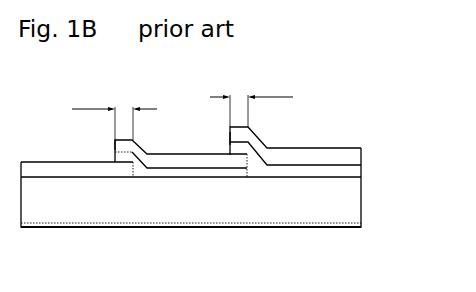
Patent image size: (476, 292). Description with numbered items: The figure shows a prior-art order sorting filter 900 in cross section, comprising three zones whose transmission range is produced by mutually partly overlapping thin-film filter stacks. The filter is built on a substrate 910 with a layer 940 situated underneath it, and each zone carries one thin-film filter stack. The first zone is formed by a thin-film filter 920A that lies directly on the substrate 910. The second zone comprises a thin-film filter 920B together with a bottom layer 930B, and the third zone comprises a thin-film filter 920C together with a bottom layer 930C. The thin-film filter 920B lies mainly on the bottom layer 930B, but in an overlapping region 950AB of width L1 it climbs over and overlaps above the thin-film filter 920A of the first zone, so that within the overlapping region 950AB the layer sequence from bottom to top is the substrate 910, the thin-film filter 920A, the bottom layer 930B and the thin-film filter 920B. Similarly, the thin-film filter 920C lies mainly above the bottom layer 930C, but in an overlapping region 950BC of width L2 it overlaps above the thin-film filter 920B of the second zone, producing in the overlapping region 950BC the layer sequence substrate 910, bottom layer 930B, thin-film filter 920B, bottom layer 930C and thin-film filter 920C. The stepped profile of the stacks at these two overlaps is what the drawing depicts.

The order sorting filter 900 is at (290, 245).
The substrate 910 is at (225, 205).
The thin-film filter 920A is at (52, 161).
The thin-film filter 920B is at (160, 153).
The thin-film filter 920C is at (298, 148).
The bottom layer 930B is at (173, 172).
The bottom layer 930C is at (343, 173).
The layer 940 is at (87, 227).
The overlapping region 950AB is at (110, 140).
The overlapping region 950BC is at (224, 136).
The width L1 is at (114, 104).
The width L2 is at (251, 97).